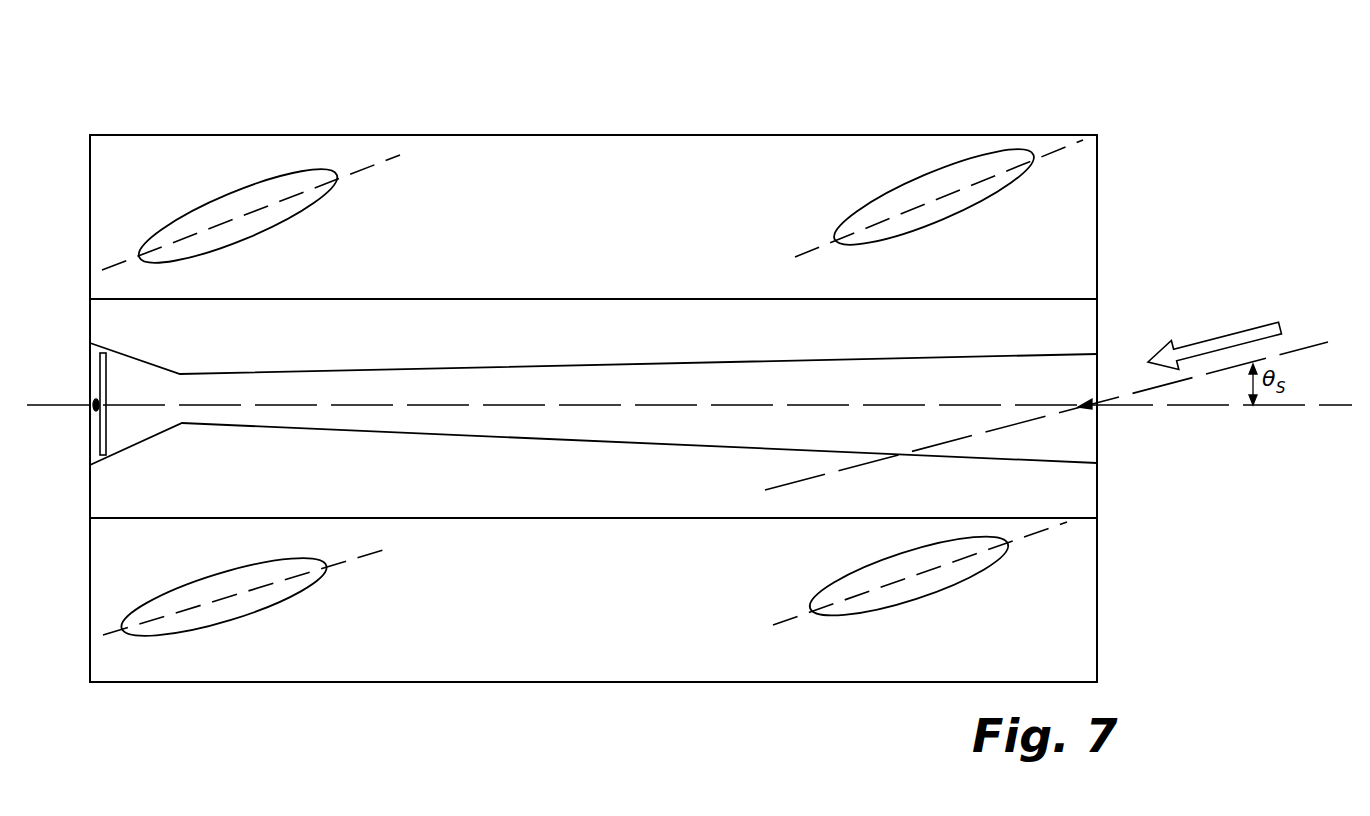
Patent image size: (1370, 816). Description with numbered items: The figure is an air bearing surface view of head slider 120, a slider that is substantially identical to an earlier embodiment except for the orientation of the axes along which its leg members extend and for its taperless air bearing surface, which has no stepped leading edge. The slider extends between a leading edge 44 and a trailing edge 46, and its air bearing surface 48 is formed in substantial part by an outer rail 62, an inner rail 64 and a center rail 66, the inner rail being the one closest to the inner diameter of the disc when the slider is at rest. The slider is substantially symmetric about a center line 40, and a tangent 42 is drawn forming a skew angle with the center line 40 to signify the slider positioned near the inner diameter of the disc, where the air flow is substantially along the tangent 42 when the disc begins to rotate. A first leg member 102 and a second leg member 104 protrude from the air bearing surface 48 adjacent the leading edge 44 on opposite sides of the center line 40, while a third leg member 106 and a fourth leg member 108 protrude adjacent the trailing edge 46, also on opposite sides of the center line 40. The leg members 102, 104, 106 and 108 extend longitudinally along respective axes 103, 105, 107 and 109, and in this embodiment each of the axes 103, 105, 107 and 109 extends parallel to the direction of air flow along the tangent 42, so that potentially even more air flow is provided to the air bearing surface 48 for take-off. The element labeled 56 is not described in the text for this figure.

The head slider 120 is at (978, 88).
The outer rail 62 is at (663, 147).
The inner rail 64 is at (644, 670).
The trailing edge 46 is at (90, 323).
The leading edge 44 is at (1097, 575).
The fan 56 is at (88, 412).
The center rail 66 is at (592, 430).
The center line 40 is at (1318, 405).
The tangent 42 is at (1318, 347).
The air bearing surface 48 is at (483, 614).
The first leg member 102 is at (943, 225).
The axis 103 is at (1062, 150).
The second leg member 104 is at (903, 607).
The axis 105 is at (1008, 545).
The third leg member 106 is at (287, 225).
The axis 107 is at (395, 160).
The fourth leg member 108 is at (215, 567).
The axis 109 is at (348, 562).